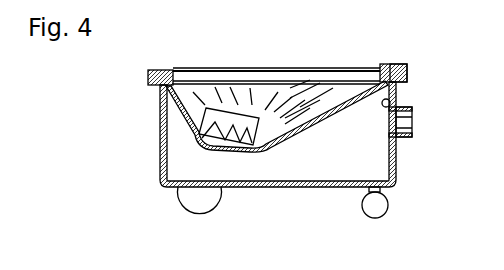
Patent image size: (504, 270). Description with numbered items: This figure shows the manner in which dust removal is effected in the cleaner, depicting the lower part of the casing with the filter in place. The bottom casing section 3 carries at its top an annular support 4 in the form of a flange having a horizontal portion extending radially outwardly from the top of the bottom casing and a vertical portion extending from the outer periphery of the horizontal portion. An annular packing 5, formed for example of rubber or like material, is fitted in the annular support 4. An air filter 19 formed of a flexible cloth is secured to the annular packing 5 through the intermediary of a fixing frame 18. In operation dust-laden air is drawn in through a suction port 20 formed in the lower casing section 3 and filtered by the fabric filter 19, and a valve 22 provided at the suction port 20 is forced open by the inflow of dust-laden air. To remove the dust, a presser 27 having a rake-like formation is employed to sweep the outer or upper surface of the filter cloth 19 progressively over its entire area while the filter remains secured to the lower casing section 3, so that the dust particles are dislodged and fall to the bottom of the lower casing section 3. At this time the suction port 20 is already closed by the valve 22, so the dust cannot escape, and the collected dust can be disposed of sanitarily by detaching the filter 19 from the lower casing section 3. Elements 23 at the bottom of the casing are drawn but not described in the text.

The bottom casing section 3 is at (288, 187).
The annular support 4 is at (409, 71).
The annular packing 5 is at (392, 66).
The fixing frame 18 is at (166, 85).
The air filter 19 is at (358, 82).
The suction port 20 is at (405, 128).
The valve 22 is at (408, 118).
The support feet 23 is at (212, 205).
The presser 27 is at (210, 120).